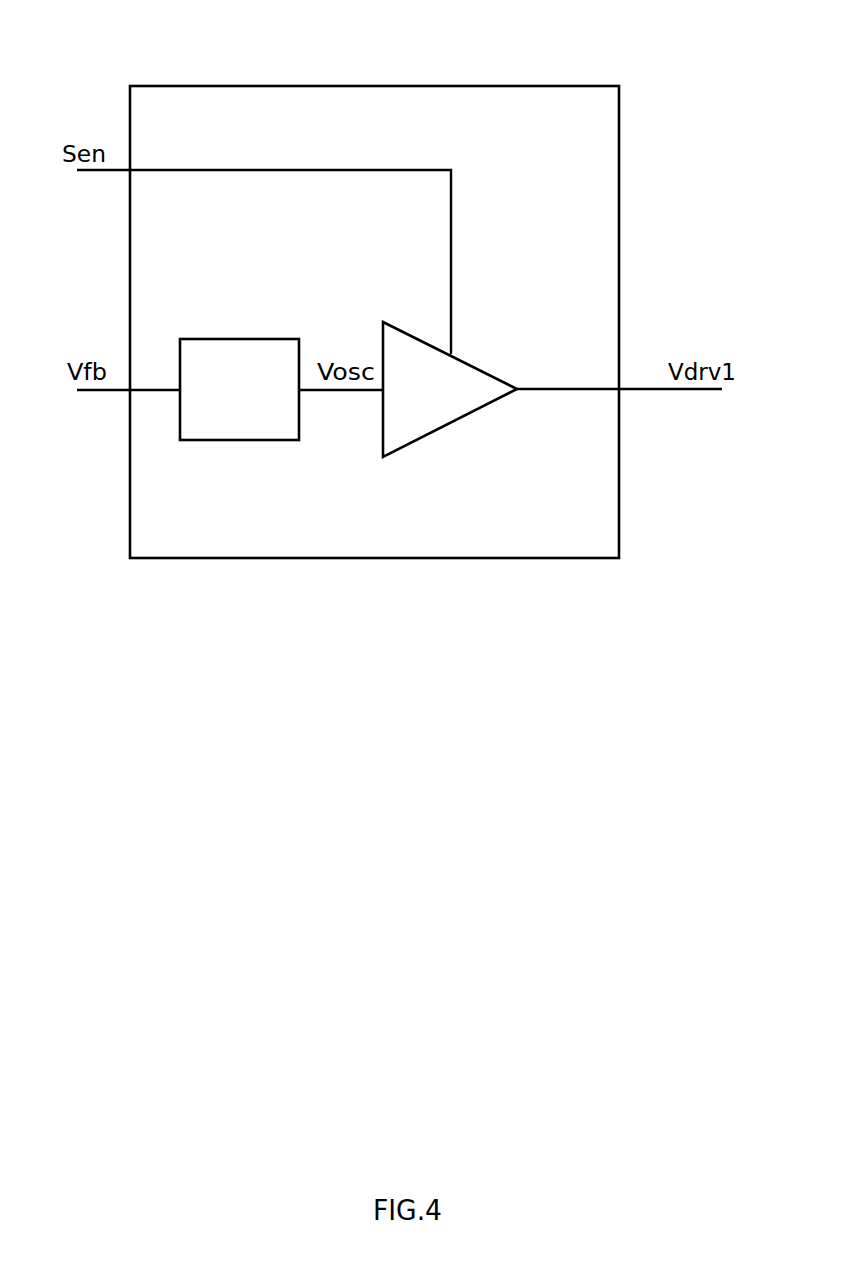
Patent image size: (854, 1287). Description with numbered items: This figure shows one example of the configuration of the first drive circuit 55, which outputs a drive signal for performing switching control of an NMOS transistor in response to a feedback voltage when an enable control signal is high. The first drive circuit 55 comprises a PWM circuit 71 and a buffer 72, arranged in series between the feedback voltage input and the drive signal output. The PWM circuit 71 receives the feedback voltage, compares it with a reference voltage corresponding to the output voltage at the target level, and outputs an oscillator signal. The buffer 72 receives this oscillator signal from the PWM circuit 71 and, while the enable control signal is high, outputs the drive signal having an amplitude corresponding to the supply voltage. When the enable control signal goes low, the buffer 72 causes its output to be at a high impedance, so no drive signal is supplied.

The first drive circuit 55 is at (307, 86).
The PWM circuit 71 is at (241, 339).
The buffer 72 is at (477, 368).